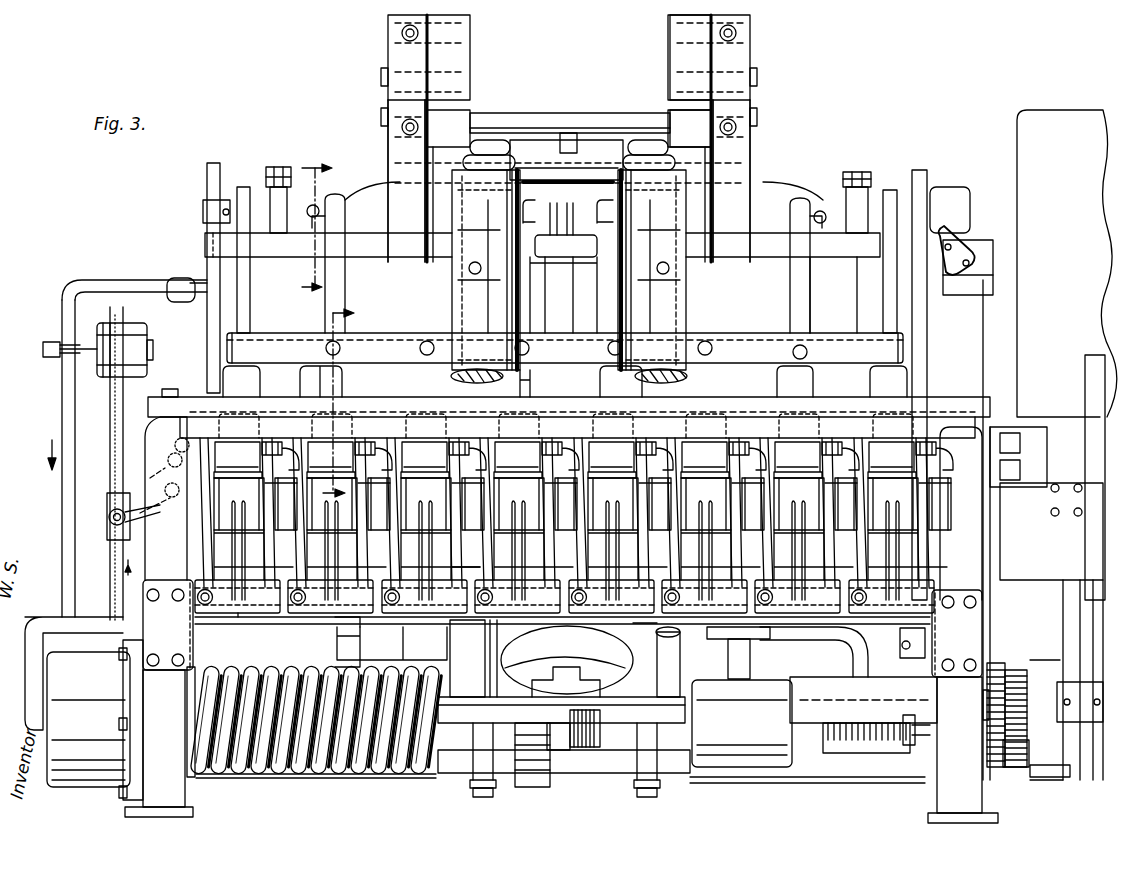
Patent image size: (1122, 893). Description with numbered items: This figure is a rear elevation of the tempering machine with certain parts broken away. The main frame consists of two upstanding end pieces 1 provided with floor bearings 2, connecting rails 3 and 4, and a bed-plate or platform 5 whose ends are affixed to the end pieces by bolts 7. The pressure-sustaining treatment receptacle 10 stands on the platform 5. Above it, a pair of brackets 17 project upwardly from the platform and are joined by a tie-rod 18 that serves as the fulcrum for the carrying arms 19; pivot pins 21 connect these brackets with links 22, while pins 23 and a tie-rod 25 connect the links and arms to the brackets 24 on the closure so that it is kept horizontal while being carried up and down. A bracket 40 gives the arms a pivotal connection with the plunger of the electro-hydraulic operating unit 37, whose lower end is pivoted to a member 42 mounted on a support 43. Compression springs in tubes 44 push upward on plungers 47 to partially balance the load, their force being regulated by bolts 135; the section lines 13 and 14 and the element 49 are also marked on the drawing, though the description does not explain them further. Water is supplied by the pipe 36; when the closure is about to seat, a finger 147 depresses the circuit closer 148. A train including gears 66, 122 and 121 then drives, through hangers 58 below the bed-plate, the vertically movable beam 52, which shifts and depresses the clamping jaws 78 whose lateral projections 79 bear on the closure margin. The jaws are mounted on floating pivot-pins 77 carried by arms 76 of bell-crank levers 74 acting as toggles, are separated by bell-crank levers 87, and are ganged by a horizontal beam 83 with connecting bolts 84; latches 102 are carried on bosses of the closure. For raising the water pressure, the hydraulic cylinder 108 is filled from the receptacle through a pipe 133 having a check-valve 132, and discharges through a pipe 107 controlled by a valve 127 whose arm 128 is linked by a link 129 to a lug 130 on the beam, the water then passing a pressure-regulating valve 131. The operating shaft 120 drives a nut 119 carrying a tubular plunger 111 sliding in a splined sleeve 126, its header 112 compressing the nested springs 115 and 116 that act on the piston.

The end pieces 1 is at (562, 741).
The floor bearings 2 is at (193, 812).
The connecting rail 3 is at (593, 775).
The connecting rail 4 is at (462, 60).
The bed-plate or platform 5 is at (157, 402).
The bolts 7 is at (177, 393).
The treatment receptacle 10 is at (833, 295).
The section line 13 is at (330, 228).
The section line 14 is at (350, 403).
The brackets 17 is at (388, 142).
The tie-rod 18 is at (590, 126).
The carrying arms 19 is at (672, 116).
The pivot pins 21 is at (400, 33).
The links 22 is at (672, 58).
The pins 23 is at (383, 78).
The brackets 24 is at (392, 172).
The tie-rod 25 is at (550, 168).
The pipe 36 is at (905, 640).
The electro-hydraulic operating unit 37 is at (567, 660).
The bracket 40 is at (578, 150).
The member 42 is at (536, 689).
The support 43 is at (630, 706).
The tubes 44 is at (568, 433).
The plungers 47 is at (505, 157).
The cap 49 is at (487, 140).
The beam 52 is at (469, 554).
The hangers 58 is at (601, 647).
The gear 66 is at (990, 703).
The bell-crank levers 74 is at (566, 539).
The arms 76 is at (564, 596).
The floating pivot-pins 77 is at (238, 615).
The clamping jaws 78 is at (328, 302).
The lateral projections 79 is at (312, 228).
The beam 83 is at (765, 340).
The connecting bolts 84 is at (327, 347).
The bell-crank levers 87 is at (210, 346).
The latch 102 is at (313, 205).
The pipe 107 is at (110, 575).
The hydraulic cylinder 108 is at (95, 720).
The tubular plunger 111 is at (578, 748).
The header 112 is at (533, 788).
The spring 115 is at (313, 770).
The spring 116 is at (398, 770).
The nut 119 is at (912, 750).
The operating shaft 120 is at (845, 742).
The gear 121 is at (1018, 770).
The gear 122 is at (1010, 680).
The sleeve 126 is at (752, 770).
The valve 127 is at (112, 514).
The arm 128 is at (107, 517).
The link 129 is at (170, 485).
The lug 130 is at (190, 440).
The pressure-regulating valve 131 is at (130, 346).
The check-valve 132 is at (183, 280).
The pipe 133 is at (62, 396).
The bolts 135 is at (470, 802).
The finger 147 is at (960, 240).
The circuit closer 148 is at (968, 277).